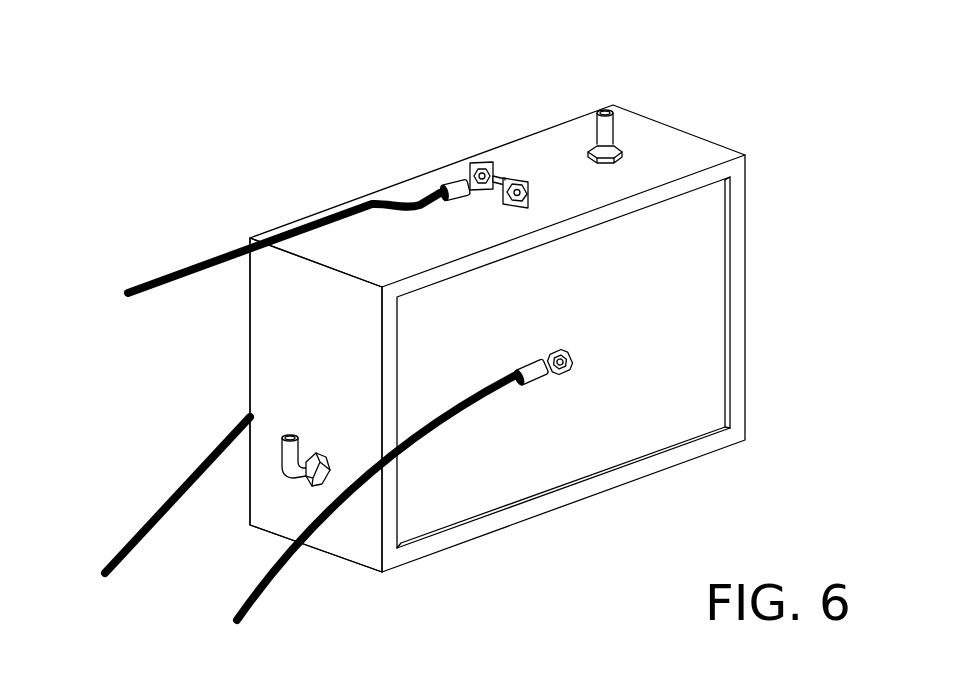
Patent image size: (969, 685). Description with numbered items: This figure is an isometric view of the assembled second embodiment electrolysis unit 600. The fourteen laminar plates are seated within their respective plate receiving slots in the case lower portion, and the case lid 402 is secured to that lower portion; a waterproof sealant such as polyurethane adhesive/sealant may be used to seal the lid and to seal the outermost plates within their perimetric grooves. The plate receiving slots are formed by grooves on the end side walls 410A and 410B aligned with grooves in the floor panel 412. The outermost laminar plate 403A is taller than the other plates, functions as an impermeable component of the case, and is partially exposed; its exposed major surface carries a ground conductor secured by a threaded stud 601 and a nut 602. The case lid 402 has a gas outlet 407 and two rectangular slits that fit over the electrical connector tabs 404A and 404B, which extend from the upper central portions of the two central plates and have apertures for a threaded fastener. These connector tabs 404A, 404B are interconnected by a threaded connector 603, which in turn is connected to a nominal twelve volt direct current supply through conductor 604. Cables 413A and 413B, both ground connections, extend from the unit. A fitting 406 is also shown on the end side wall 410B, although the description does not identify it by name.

The assembled second embodiment electrolysis unit 600 is at (334, 102).
The case lid 402 is at (677, 158).
The laminar plate 403A is at (693, 292).
The electrical connector tab 404A is at (523, 177).
The electrical connector tab 404B is at (490, 163).
The elbow fitting 406 is at (295, 475).
The gas outlet 407 is at (605, 133).
The end side wall 410A is at (738, 345).
The end side wall 410B is at (290, 362).
The floor panel 412 is at (593, 485).
The cable 413A is at (273, 590).
The cable 413B is at (168, 495).
The threaded stud 601 is at (572, 364).
The nut 602 is at (567, 367).
The threaded connector 603 is at (499, 177).
The conductor 604 is at (205, 260).